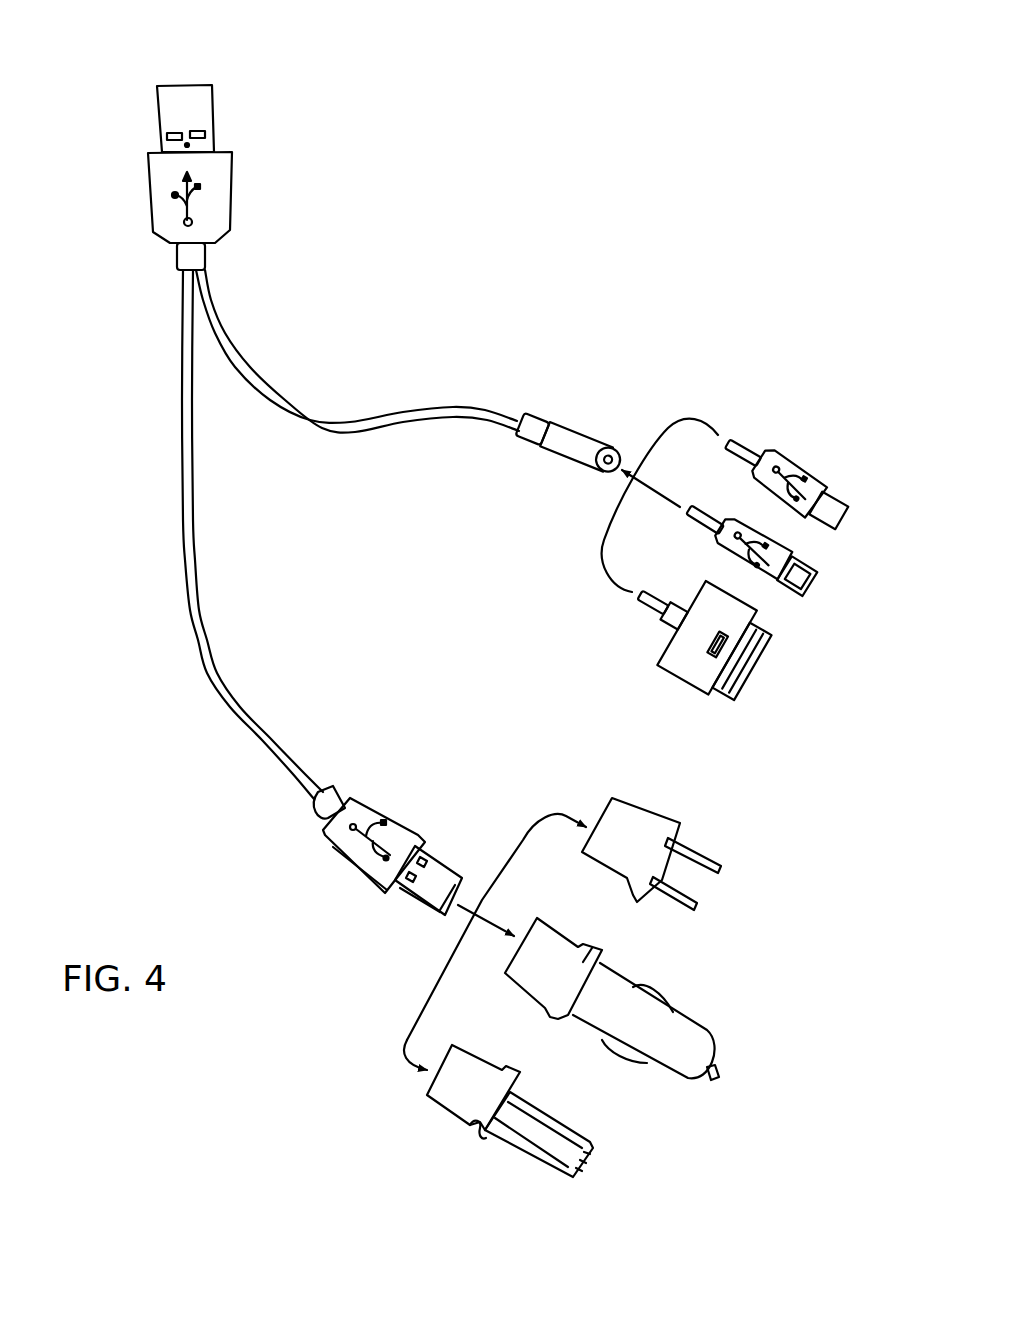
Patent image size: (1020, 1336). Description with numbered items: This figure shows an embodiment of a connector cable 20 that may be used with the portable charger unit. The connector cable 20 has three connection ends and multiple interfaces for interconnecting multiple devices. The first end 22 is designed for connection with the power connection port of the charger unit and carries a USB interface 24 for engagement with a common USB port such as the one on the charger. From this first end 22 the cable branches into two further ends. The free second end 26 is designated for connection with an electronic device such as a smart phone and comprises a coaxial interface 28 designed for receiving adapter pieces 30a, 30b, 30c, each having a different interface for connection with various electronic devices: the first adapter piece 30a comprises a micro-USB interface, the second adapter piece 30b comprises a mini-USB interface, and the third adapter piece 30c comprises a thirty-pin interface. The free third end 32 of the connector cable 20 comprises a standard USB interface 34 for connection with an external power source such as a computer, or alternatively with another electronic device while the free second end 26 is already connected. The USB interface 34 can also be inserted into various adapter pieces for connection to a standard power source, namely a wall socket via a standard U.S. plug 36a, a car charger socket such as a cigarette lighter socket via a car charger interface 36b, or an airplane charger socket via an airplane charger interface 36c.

The connector cable 20 is at (450, 320).
The first end 22 is at (133, 213).
The USB interface 24 is at (205, 102).
The free second end 26 is at (588, 418).
The coaxial interface 28 is at (583, 465).
The first adapter piece 30a is at (795, 473).
The second adapter piece 30b is at (790, 556).
The third adapter piece 30c is at (700, 680).
The free third end 32 is at (340, 890).
The USB interface 34 is at (440, 875).
The standard U.S. plug 36a is at (647, 837).
The car charger interface 36b is at (587, 946).
The airplane charger interface 36c is at (477, 1138).